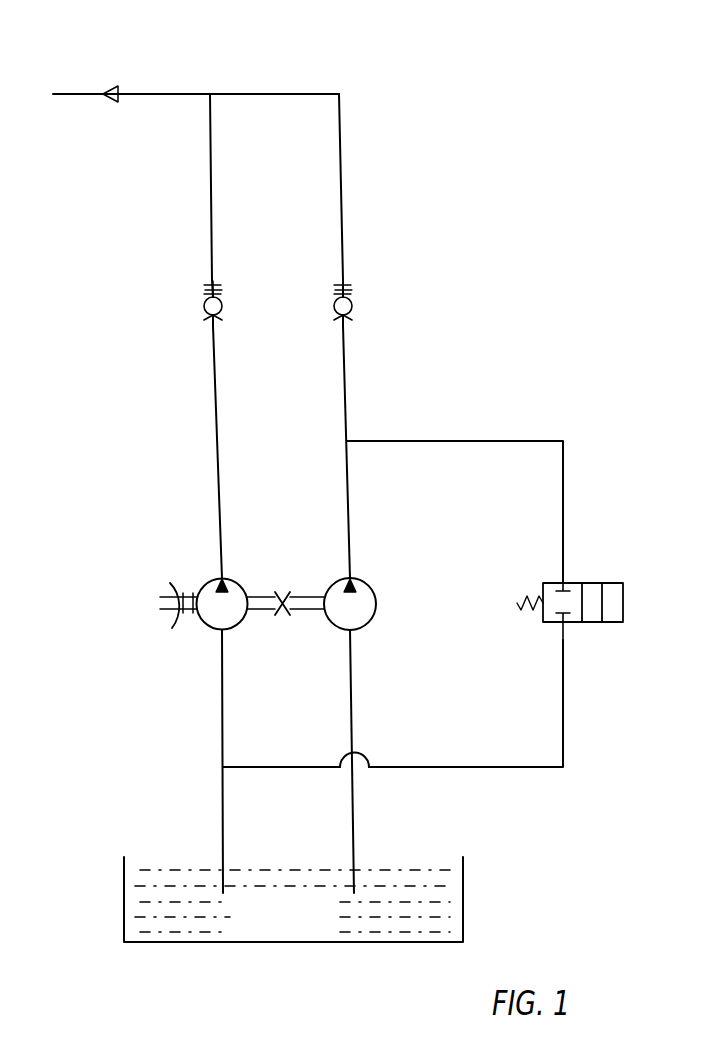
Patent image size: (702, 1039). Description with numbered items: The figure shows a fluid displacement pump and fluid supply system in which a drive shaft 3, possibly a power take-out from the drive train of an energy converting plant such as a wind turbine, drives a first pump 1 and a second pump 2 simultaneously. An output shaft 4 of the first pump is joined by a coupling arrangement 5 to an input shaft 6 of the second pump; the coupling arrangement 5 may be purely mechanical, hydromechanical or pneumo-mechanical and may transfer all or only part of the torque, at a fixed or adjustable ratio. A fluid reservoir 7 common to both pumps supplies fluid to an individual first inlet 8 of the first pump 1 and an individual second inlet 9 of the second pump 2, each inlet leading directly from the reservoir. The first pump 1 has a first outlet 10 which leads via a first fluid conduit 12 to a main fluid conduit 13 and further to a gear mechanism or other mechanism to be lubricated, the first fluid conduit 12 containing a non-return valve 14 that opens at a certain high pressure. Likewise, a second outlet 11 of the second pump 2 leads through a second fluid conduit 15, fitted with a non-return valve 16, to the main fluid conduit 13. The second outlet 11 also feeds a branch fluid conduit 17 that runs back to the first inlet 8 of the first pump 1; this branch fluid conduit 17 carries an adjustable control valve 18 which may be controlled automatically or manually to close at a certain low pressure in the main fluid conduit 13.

The first pump 1 is at (232, 612).
The second pump 2 is at (362, 612).
The drive shaft 3 is at (165, 598).
The output shaft 4 is at (262, 600).
The coupling arrangement 5 is at (283, 598).
The input shaft 6 is at (309, 600).
The fluid reservoir 7 is at (293, 899).
The first inlet 8 is at (222, 670).
The second inlet 9 is at (351, 670).
The first outlet 10 is at (218, 490).
The second outlet 11 is at (347, 486).
The first fluid conduit 12 is at (212, 220).
The main fluid conduit 13 is at (164, 93).
The non-return valve 14 is at (206, 300).
The second fluid conduit 15 is at (343, 216).
The non-return valve 16 is at (336, 300).
The branch fluid conduit 17 is at (470, 440).
The control valve 18 is at (575, 584).